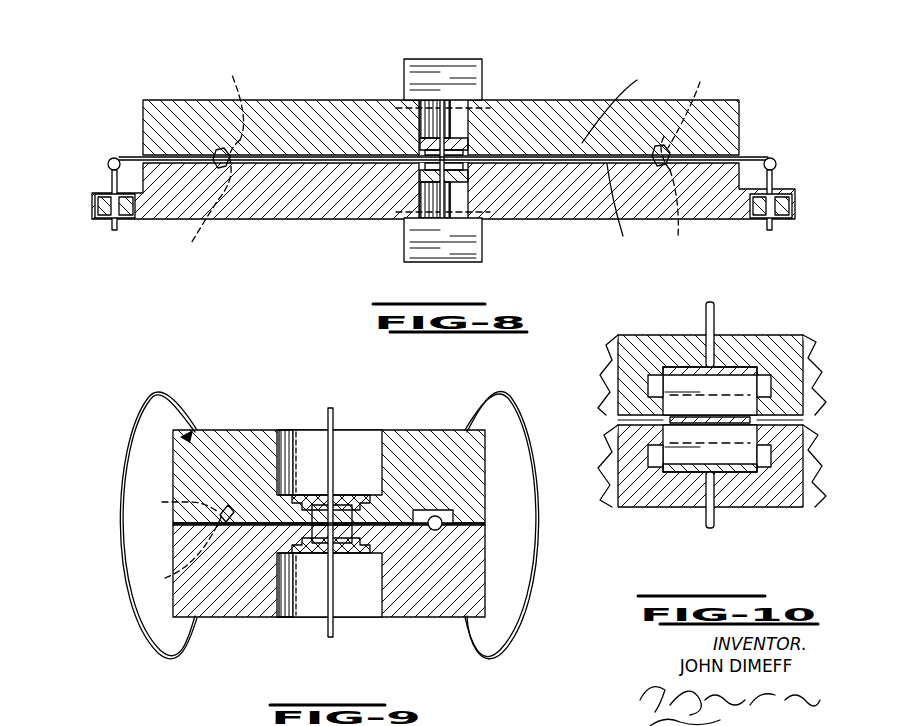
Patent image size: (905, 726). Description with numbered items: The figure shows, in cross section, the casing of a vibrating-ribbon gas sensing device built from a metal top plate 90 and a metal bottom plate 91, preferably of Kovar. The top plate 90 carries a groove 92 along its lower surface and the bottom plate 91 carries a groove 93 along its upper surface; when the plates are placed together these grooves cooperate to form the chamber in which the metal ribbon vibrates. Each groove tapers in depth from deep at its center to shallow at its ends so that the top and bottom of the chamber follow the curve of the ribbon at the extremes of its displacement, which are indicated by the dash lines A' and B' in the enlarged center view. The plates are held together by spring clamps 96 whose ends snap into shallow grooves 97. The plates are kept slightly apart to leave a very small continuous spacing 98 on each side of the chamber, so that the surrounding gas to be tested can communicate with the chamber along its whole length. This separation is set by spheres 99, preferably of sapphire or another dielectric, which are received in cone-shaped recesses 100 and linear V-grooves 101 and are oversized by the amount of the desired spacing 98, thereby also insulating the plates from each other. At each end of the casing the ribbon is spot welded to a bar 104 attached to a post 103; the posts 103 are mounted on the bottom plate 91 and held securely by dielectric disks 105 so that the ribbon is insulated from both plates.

In FIG. 8, the top plate 90 is at (722, 100).
In FIG. 8, the bottom plate 91 is at (712, 220).
In FIG. 8, the groove 92 is at (616, 101).
In FIG. 10, the groove 92 is at (665, 395).
In FIG. 8, the groove 93 is at (623, 211).
In FIG. 10, the groove 93 is at (665, 445).
In FIG. 8, the spring clamp 96 is at (404, 72).
In FIG. 9, the spring clamp 96 is at (133, 420).
In FIG. 9, the shallow groove 97 is at (195, 432).
In FIG. 9, the spacing 98 is at (178, 522).
In FIG. 10, the spacing 98 is at (665, 420).
In FIG. 8, the sphere 99 is at (210, 200).
In FIG. 9, the sphere 99 is at (443, 528).
In FIG. 8, the cone-shaped recess 100 is at (424, 159).
In FIG. 9, the cone-shaped recess 100 is at (173, 551).
In FIG. 8, the V-groove 101 is at (693, 104).
In FIG. 9, the V-groove 101 is at (497, 580).
In FIG. 8, the post 103 is at (108, 180).
In FIG. 8, the bar 104 is at (112, 158).
In FIG. 8, the dielectric disk 105 is at (107, 215).
In FIG. 10, the dash line A' is at (643, 345).
In FIG. 10, the dash line B' is at (745, 498).